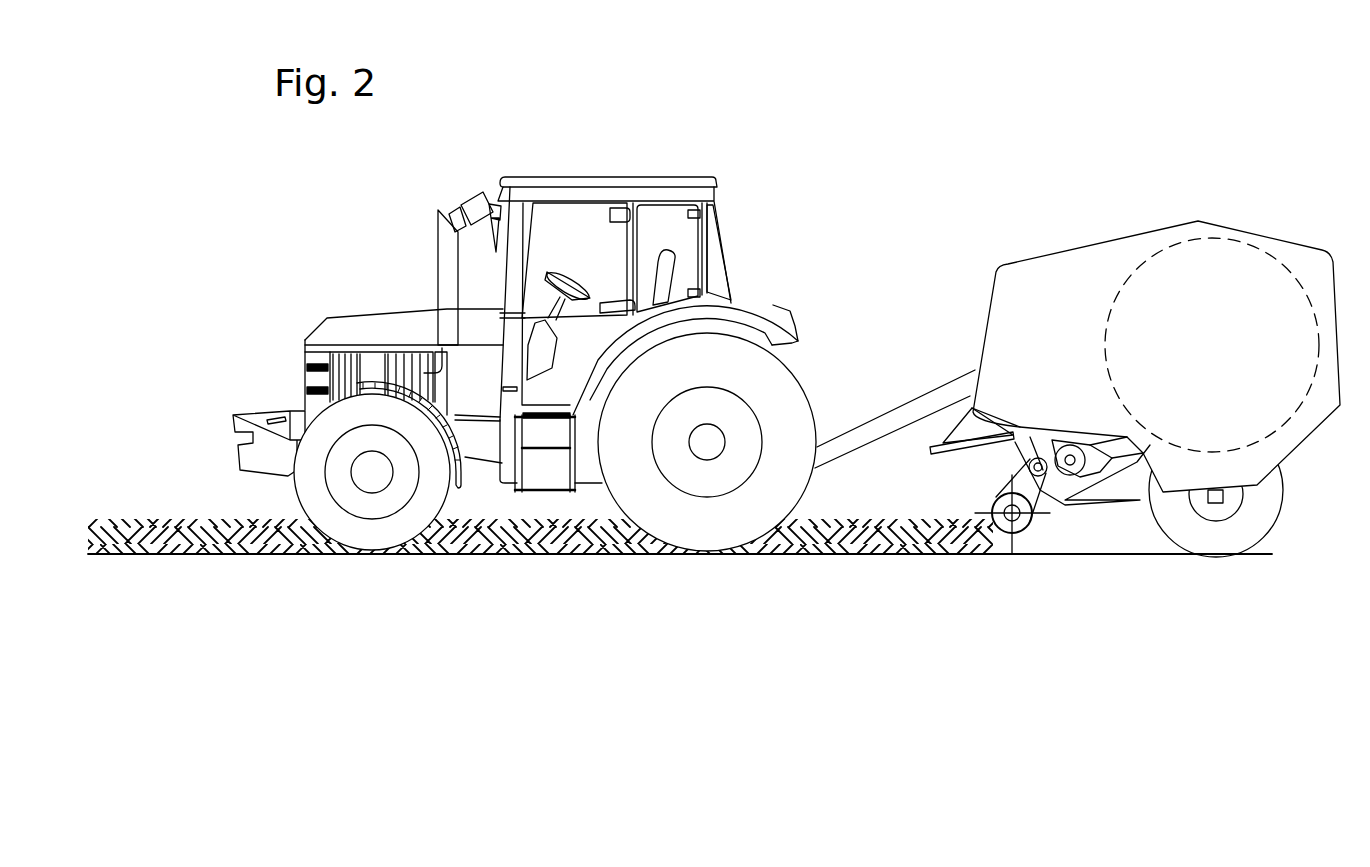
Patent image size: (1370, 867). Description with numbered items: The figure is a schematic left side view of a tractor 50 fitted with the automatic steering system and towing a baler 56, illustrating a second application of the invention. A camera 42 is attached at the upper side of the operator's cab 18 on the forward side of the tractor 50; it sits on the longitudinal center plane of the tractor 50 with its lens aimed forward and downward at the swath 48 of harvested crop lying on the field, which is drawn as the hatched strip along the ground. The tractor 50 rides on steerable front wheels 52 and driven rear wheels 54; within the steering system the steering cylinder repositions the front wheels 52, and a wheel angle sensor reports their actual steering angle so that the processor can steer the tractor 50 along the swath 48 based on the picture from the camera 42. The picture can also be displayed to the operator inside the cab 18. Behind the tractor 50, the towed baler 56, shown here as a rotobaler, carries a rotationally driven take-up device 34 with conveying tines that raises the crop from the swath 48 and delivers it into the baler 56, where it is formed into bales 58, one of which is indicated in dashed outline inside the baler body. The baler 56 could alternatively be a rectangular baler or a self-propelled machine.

The operator's cab 18 is at (558, 218).
The take-up device 34 is at (1025, 538).
The camera 42 is at (472, 205).
The swath 48 is at (232, 538).
The tractor 50 is at (604, 335).
The front wheels 52 is at (378, 534).
The rear wheels 54 is at (714, 532).
The baler 56 is at (1135, 355).
The bales 58 is at (1152, 278).